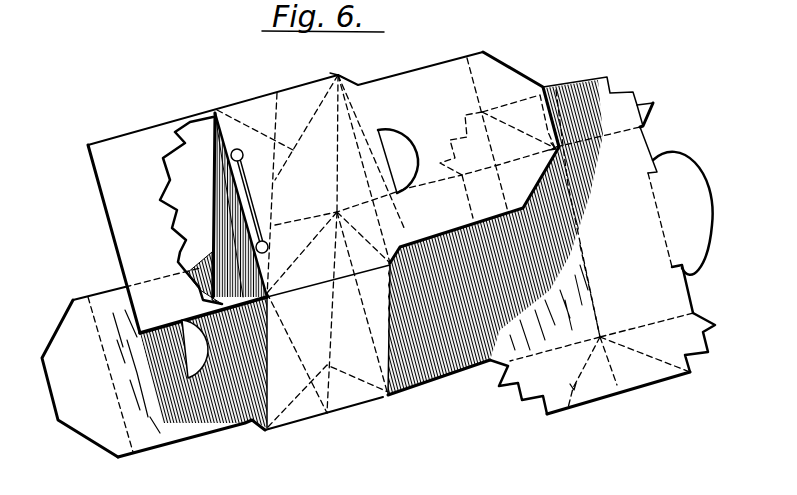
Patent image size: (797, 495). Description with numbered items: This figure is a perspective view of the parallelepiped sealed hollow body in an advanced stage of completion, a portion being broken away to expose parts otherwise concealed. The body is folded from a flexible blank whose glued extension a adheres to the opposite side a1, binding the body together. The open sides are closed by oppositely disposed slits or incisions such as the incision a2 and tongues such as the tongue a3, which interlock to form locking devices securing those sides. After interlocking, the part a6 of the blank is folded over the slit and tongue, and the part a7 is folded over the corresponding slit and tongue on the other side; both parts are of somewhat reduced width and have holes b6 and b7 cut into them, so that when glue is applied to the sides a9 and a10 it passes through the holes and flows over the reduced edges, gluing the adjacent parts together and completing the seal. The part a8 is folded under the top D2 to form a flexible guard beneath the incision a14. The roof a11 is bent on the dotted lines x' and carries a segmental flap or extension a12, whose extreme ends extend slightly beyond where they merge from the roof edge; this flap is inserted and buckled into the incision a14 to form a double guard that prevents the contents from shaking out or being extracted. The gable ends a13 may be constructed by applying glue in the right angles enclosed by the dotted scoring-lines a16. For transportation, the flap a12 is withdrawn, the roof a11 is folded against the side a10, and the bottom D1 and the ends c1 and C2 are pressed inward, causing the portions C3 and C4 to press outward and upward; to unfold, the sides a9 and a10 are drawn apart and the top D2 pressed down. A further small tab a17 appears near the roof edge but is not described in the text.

The extension a is at (240, 110).
The opposite side of the blank a1 is at (297, 93).
The slit or incision a2 is at (213, 182).
The tongue a3 is at (216, 199).
The part of the blank a6 is at (163, 437).
The part of the blank a7 is at (448, 157).
The part of the blank a8 is at (56, 393).
The side a9 is at (213, 204).
The side a10 is at (437, 350).
The roof a11 is at (607, 207).
The segmental flap or extension a12 is at (696, 188).
The gable ends a13 is at (633, 378).
The incision a14 is at (252, 201).
The scoring-lines a16 is at (578, 392).
The locking tab a17 is at (640, 120).
The hole b6 is at (190, 350).
The hole b7 is at (412, 110).
The end c1 is at (278, 174).
The end C2 is at (331, 359).
The side portion C3 is at (292, 152).
The side portion C4 is at (343, 218).
The bottom D1 is at (292, 316).
The top D2 is at (343, 169).
The dotted lines x' is at (601, 291).